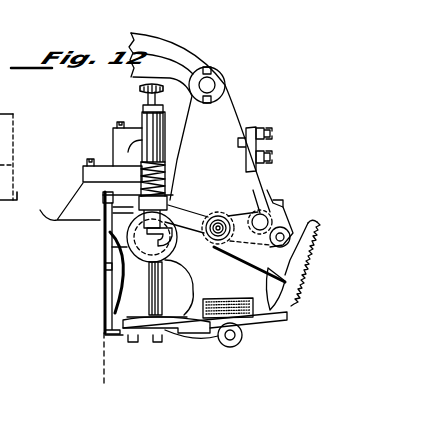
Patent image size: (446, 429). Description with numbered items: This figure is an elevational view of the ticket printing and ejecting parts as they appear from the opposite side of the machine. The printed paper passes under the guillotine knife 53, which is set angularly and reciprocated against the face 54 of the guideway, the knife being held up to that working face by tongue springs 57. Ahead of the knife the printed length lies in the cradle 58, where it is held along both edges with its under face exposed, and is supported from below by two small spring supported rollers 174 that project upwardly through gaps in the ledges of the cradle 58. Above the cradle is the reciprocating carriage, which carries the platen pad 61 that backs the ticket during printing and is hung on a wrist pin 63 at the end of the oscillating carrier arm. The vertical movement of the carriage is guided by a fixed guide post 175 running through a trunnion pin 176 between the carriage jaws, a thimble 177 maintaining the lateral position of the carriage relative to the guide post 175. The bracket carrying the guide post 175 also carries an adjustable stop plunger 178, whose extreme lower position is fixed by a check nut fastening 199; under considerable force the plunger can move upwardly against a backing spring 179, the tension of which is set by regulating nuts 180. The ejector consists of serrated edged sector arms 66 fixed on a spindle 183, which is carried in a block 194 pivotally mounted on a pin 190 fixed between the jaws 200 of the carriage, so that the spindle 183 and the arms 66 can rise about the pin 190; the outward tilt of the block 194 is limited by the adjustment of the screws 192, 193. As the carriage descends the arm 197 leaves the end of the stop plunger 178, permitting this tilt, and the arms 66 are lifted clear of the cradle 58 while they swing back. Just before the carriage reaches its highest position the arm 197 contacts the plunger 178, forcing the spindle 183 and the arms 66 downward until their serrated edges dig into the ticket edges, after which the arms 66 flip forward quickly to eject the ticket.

The wrist pin 63 is at (226, 85).
The check nut fastening 199 is at (143, 104).
The adjusting screw 192 is at (271, 131).
The block 194 is at (256, 145).
The adjusting screw 193 is at (272, 159).
The pin 190 is at (268, 203).
The backing spring 179 is at (180, 162).
The regulating nuts 180 is at (170, 182).
The adjustable stop plunger 178 is at (170, 207).
The spindle 183 is at (222, 212).
The trunnion pin 176 is at (100, 233).
The thimble 177 is at (112, 248).
The tongue springs 57 is at (100, 267).
The arm 197 is at (193, 240).
The jaws of the carriage 200 is at (249, 278).
The fixed guide post 175 is at (107, 294).
The guillotine knife 53 is at (102, 311).
The face of the guideway 54 is at (108, 337).
The spring supported rollers 174 is at (222, 348).
The platen pad 61 is at (244, 316).
The cradle 58 is at (282, 320).
The serrated edged sector arms 66 is at (293, 302).